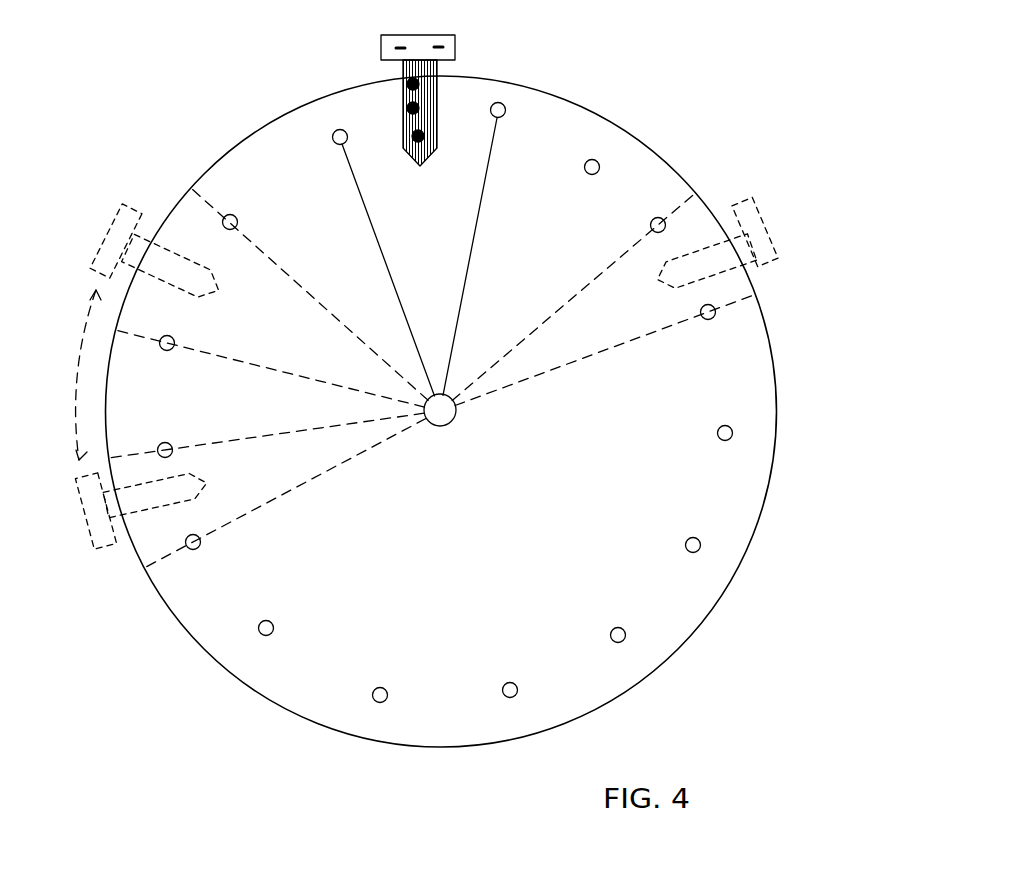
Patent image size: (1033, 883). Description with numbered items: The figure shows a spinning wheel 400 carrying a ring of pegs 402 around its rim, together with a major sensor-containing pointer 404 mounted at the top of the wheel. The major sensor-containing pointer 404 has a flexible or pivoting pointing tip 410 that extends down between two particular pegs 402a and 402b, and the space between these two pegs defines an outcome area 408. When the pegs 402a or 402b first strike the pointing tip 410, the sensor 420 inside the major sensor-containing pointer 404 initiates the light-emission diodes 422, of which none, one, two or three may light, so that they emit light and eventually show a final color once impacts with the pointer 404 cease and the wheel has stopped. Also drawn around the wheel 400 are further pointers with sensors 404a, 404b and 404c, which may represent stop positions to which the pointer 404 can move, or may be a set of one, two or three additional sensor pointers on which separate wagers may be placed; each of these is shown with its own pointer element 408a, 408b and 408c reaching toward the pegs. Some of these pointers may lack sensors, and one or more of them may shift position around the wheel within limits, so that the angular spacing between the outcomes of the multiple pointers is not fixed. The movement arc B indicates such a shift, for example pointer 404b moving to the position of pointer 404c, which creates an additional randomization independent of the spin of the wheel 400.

The spinning wheel 400 is at (670, 148).
The pegs 402 is at (706, 438).
The peg 402a is at (334, 146).
The peg 402b is at (504, 121).
The major sensor-containing pointer 404 is at (418, 121).
The pointer with sensor 404a is at (768, 274).
The pointer with sensor 404b is at (183, 196).
The pointer with sensor 404c is at (123, 577).
The outcome area 408 is at (483, 98).
The probe at position a 408a is at (723, 292).
The probe at position b 408b is at (178, 208).
The probe at position c 408c is at (144, 543).
The pointing tip 410 is at (427, 168).
The sensor 420 is at (381, 51).
The light-emission diodes 422 is at (405, 98).
The movement arc B is at (74, 375).